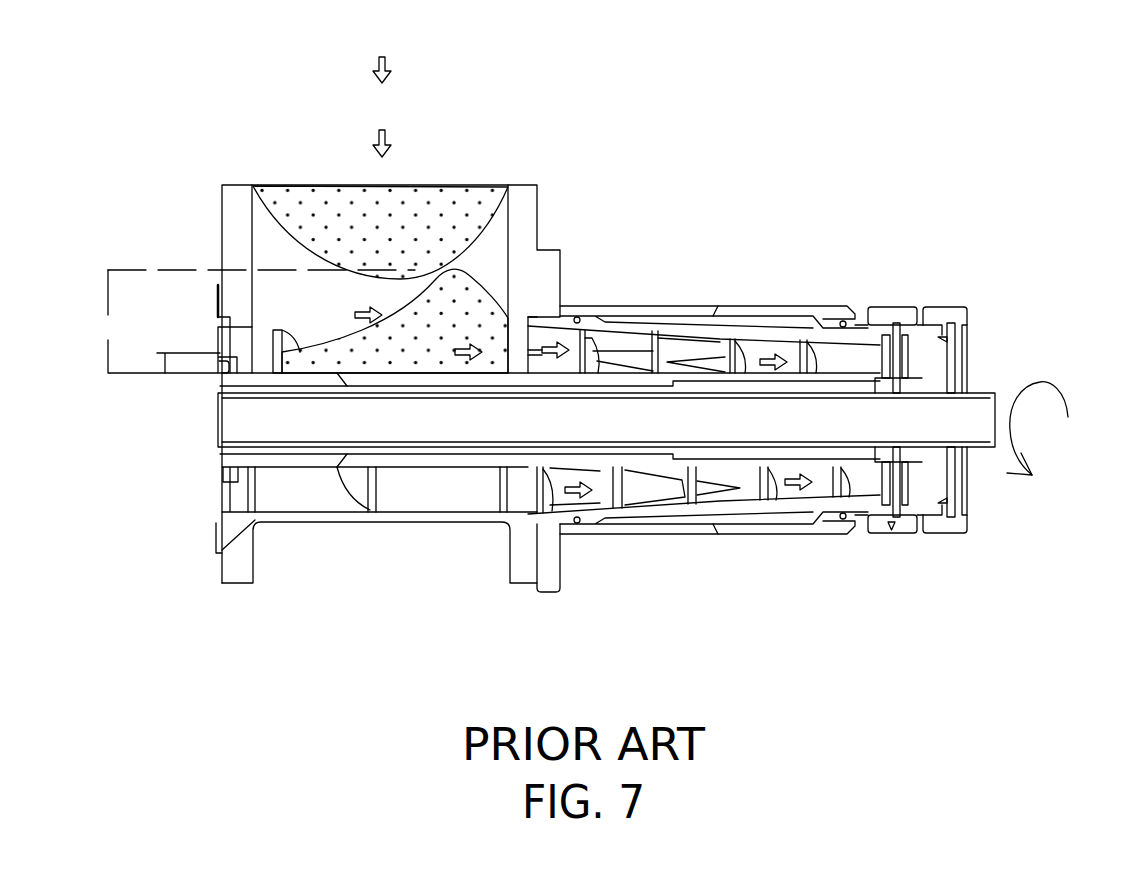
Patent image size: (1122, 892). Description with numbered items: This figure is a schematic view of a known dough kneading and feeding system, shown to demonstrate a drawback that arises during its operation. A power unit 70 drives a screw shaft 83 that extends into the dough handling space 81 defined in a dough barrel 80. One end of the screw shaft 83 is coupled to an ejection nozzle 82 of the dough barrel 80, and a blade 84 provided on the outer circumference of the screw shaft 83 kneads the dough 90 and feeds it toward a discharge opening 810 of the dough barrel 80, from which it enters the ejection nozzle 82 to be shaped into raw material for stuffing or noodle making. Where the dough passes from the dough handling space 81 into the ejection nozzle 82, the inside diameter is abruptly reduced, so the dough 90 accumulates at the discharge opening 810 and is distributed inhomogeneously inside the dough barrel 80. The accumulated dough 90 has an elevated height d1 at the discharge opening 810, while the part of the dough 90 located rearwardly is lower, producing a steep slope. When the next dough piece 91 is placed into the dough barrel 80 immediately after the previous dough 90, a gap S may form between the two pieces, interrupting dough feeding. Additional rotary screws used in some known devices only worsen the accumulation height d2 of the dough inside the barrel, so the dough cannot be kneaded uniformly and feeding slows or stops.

The power unit 70 is at (280, 692).
The dough barrel 80 is at (211, 191).
The dough handling space 81 is at (509, 235).
The discharge opening 810 is at (520, 340).
The ejection nozzle 82 is at (788, 307).
The screw shaft 83 is at (477, 450).
The blade 84 is at (362, 487).
The dough 90 is at (480, 300).
The dough piece 91 is at (425, 200).
The gap S is at (277, 253).
The elevated height d1 is at (261, 321).
The accumulation height d2 is at (176, 364).